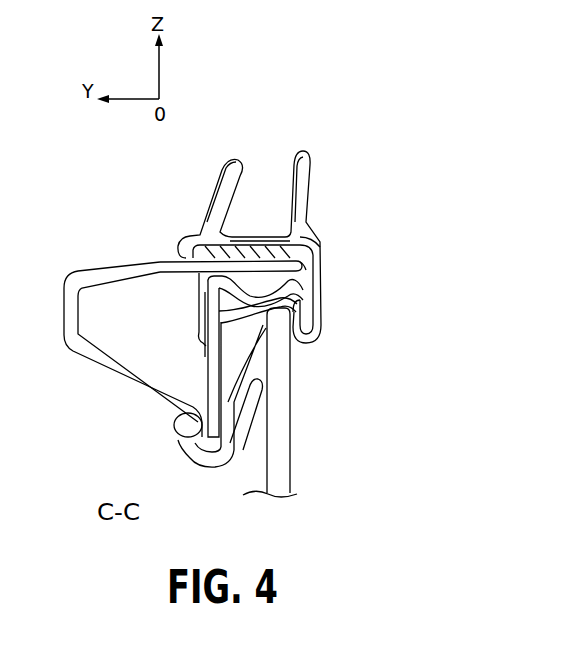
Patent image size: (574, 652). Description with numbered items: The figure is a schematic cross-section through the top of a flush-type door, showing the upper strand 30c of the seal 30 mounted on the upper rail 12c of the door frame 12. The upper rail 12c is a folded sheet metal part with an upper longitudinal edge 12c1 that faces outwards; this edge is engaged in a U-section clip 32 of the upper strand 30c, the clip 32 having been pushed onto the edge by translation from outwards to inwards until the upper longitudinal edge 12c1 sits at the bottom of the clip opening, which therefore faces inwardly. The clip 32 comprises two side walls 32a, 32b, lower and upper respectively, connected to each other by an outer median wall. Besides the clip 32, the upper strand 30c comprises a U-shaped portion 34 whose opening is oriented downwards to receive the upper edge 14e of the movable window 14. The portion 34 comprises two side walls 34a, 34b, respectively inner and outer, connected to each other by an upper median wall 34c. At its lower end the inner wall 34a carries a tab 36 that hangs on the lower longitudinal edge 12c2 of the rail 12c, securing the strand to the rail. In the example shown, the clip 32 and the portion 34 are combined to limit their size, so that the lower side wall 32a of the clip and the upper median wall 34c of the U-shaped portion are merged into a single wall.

The door frame 12 is at (217, 284).
The upper rail 12c is at (183, 349).
The upper longitudinal edge 12c1 is at (273, 250).
The lower longitudinal edge 12c2 is at (176, 419).
The movable window 14 is at (311, 393).
The upper edge of the movable window 14e is at (300, 302).
The seal 30 is at (271, 278).
The upper strand 30c is at (330, 225).
The U-section clip 32 is at (302, 222).
The lower side wall of the clip 32a is at (303, 264).
The upper side wall of the clip 32b is at (265, 245).
The U-shaped portion 34 is at (234, 356).
The inner side wall 34a is at (214, 340).
The outer side wall 34b is at (322, 340).
The upper median wall 34c is at (261, 299).
The tab 36 is at (180, 446).